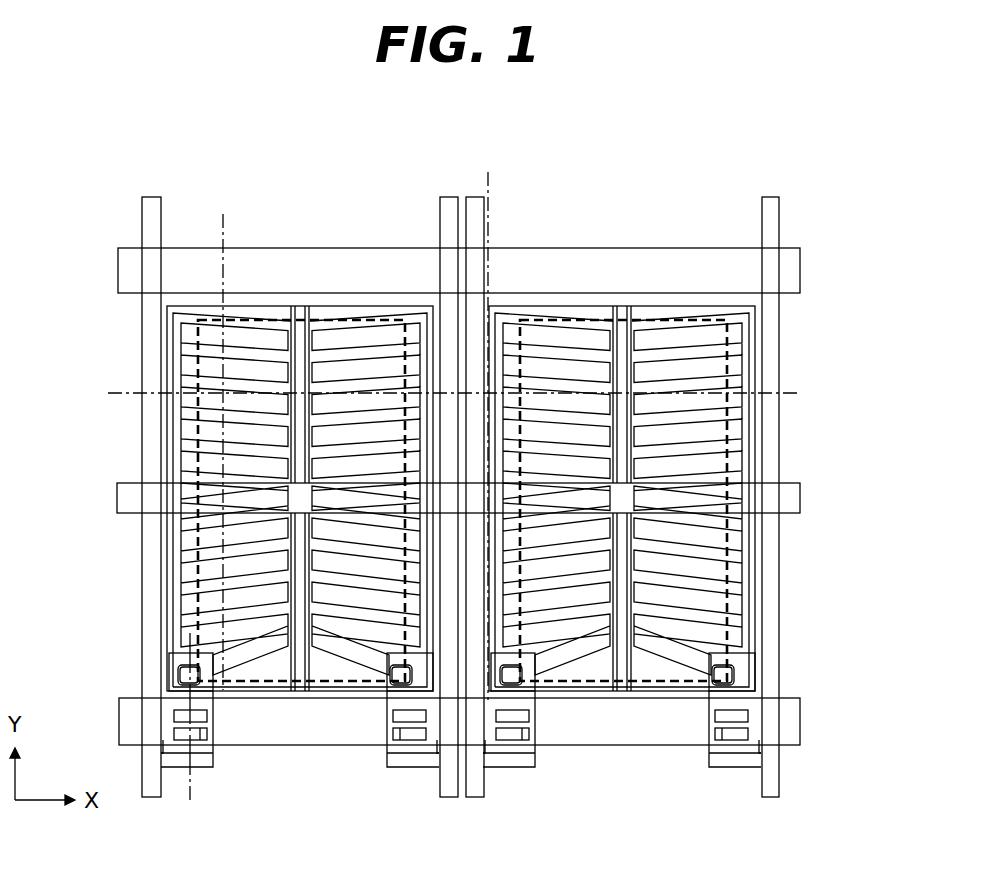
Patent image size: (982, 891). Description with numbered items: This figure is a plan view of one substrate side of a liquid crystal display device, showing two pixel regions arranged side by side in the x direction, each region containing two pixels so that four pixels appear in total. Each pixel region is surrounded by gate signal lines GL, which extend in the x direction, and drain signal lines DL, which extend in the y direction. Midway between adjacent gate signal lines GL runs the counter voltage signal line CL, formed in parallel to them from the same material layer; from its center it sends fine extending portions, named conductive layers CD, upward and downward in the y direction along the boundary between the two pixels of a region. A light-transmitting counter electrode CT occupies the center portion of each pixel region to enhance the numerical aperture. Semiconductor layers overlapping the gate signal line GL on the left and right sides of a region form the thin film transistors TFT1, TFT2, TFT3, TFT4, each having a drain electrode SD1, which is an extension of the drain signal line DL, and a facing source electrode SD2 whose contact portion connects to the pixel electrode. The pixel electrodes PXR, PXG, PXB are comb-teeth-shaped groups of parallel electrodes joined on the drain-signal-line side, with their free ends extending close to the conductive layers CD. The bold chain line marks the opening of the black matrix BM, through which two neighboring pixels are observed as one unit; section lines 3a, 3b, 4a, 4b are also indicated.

The gate signal line GL is at (786, 704).
The counter voltage signal line CL is at (800, 499).
The drain signal line DL is at (148, 212).
The counter electrode CT is at (171, 333).
The black matrix BM is at (262, 322).
The conductive layer CD is at (298, 318).
The pixel electrode of red pixel PXR is at (208, 421).
The pixel electrode of green pixel PXG is at (340, 356).
The pixel electrode of blue pixel PXB is at (576, 330).
The drain electrode SD1 is at (183, 762).
The source electrode SD2 is at (188, 667).
The thin film transistor TFT1 is at (195, 724).
The thin film transistor TFT2 is at (408, 728).
The thin film transistor 3 with semiconductor layer AS TFT3 is at (517, 724).
The thin film transistor 4 with semiconductor layer AS TFT4 is at (744, 725).
The section line 3a is at (442, 377).
The section line 3b is at (508, 423).
The section line 4a is at (195, 735).
The section line 4b is at (227, 440).